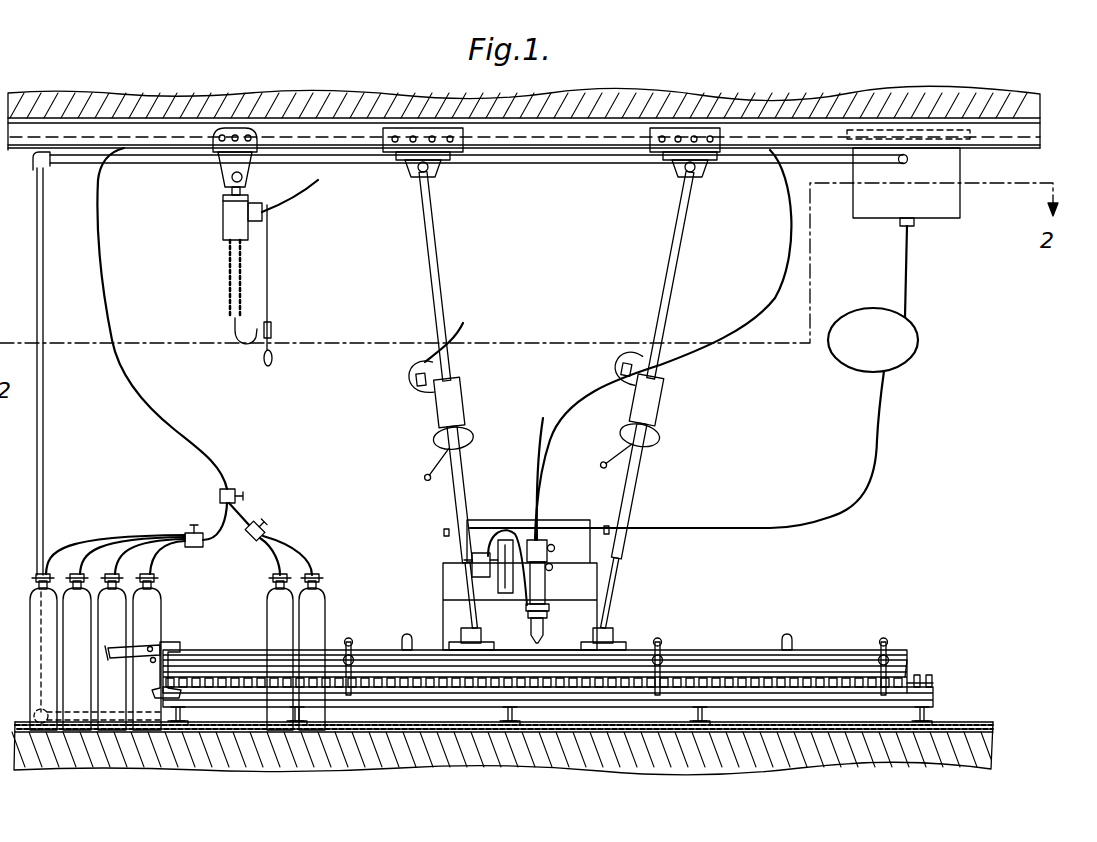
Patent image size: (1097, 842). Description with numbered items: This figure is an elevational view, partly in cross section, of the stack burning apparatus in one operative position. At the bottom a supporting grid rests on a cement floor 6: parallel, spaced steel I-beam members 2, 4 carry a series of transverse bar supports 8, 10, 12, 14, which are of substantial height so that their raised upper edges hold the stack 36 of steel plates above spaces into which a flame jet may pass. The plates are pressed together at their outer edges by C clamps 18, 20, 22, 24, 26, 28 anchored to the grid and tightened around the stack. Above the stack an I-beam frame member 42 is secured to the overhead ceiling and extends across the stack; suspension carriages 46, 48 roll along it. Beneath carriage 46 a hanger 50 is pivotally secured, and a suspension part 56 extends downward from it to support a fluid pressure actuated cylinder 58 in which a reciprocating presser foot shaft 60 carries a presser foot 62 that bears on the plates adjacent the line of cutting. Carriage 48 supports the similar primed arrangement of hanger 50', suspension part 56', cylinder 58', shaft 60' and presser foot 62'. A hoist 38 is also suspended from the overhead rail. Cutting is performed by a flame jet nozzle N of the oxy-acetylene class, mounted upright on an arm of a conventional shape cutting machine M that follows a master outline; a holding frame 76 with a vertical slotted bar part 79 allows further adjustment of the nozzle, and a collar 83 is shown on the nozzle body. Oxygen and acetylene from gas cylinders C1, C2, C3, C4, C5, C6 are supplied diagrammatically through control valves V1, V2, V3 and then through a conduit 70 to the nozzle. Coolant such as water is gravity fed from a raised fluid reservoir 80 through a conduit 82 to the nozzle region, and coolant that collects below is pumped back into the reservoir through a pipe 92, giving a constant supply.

The steel I-beam member 2 is at (933, 690).
The steel I-beam member 4 is at (933, 711).
The cement floor 6 is at (980, 728).
The bar support 8 is at (907, 677).
The bar support 10 is at (917, 678).
The bar support 12 is at (929, 676).
The bar support 14 is at (937, 680).
The C clamp 18 is at (170, 640).
The C clamp 20 is at (362, 647).
The C clamp 22 is at (415, 616).
The C clamp 24 is at (661, 637).
The C clamp 26 is at (788, 636).
The C clamp 28 is at (884, 637).
The workpiece stack 36 is at (808, 650).
The hoist 38 is at (232, 222).
The I-beam frame member 42 is at (1028, 133).
The suspension carriage 46 is at (656, 160).
The suspension carriage 48 is at (452, 152).
The hanger 50 is at (696, 172).
The hanger 50' is at (418, 184).
The suspension part 56 is at (681, 275).
The suspension part 56' is at (452, 277).
The fluid pressure actuated cylinder 58 is at (642, 414).
The fluid pressure actuated cylinder 58' is at (454, 402).
The presser foot shaft 60 is at (622, 526).
The presser foot shaft 60' is at (476, 527).
The presser foot 62 is at (614, 634).
The presser foot 62' is at (484, 639).
The conduit 70 is at (534, 436).
The holding frame 76 is at (472, 559).
The vertical slotted bar part 79 is at (500, 575).
The fluid reservoir 80 is at (950, 203).
The conduit 82 is at (913, 287).
The torch collar 83 is at (549, 611).
The pipe 92 is at (564, 158).
The shape cutting machine M is at (478, 522).
The flame jet nozzle N is at (546, 640).
The control valve V1 is at (187, 537).
The control valve V2 is at (264, 523).
The control valve V3 is at (234, 488).
The gas cylinder C1 is at (80, 592).
The gas cylinder C2 is at (114, 592).
The gas cylinder C3 is at (147, 592).
The gas cylinder C4 is at (165, 592).
The gas cylinder C5 is at (267, 603).
The gas cylinder C6 is at (326, 603).